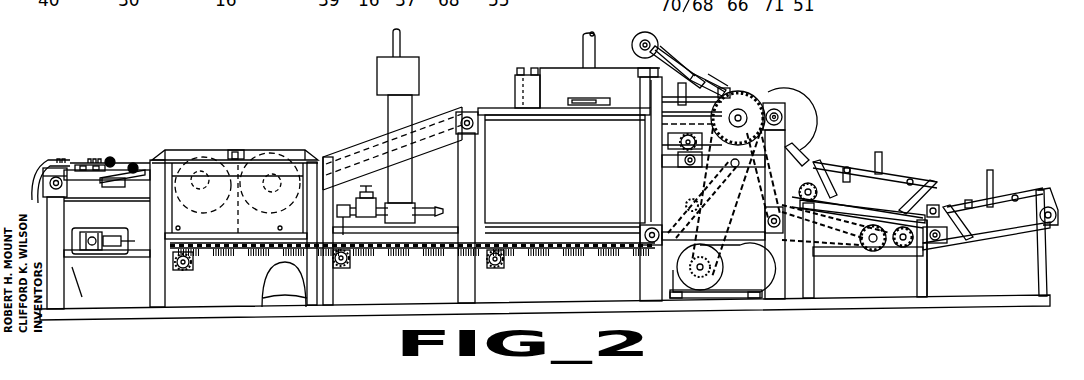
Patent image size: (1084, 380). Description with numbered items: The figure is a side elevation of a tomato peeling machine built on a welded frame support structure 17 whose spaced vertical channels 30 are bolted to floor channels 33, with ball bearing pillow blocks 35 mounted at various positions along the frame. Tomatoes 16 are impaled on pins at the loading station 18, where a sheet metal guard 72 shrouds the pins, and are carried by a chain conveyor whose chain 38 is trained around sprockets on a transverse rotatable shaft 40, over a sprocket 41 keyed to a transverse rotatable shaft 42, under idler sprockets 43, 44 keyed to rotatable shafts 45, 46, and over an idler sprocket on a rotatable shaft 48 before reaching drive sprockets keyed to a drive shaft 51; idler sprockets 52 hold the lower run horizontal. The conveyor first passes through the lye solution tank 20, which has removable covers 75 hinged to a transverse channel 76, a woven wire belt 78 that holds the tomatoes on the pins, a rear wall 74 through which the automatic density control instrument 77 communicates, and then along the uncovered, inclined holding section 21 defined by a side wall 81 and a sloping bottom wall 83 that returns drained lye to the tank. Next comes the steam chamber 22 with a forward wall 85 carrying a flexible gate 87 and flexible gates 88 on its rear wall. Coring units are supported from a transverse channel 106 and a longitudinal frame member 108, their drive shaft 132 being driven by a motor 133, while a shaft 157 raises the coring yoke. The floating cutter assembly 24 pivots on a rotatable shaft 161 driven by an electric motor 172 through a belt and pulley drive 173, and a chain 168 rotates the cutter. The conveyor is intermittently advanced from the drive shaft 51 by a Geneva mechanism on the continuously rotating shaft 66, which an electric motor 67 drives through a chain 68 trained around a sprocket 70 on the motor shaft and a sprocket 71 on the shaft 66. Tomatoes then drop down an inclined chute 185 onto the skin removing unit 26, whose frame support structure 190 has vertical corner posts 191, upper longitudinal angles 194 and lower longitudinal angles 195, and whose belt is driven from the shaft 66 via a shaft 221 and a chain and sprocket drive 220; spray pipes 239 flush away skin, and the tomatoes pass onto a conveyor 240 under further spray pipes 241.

The sheet metal guard 72 is at (44, 168).
The loading station 18 is at (78, 163).
The chain 38 is at (85, 167).
The tomatoes 16 is at (135, 163).
The idler sprocket 43 is at (190, 157).
The removable covers 75 is at (250, 152).
The idler sprocket 44 is at (272, 156).
The holding section 21 is at (350, 150).
The side wall 81 is at (376, 150).
The automatic density control instrument 77 is at (398, 126).
The steam chamber 22 is at (566, 67).
The forward wall 85 is at (515, 83).
The gate 87 is at (535, 95).
The flexible gates 88 is at (646, 91).
The belt and pulley drive 173 is at (640, 60).
The electric motor 172 is at (648, 36).
The drive shaft 132 is at (652, 176).
The rotatable shaft 161 is at (691, 68).
The chain 168 is at (720, 84).
The floating cutter assembly 24 is at (733, 90).
The sprocket 71 is at (745, 110).
The continuously rotating shaft 66 is at (771, 87).
The ball bearing pillow blocks 35 is at (44, 180).
The drive shaft 51 is at (788, 118).
The inclined chute 185 is at (803, 152).
The skin removing unit 26 is at (860, 173).
The spray pipes 239 is at (918, 177).
The upper longitudinal angles 194 is at (879, 178).
The spray pipes 241 is at (970, 198).
The conveyor 240 is at (1050, 198).
The transverse rotatable shaft 40 is at (48, 188).
The sprocket 41 is at (100, 183).
The transverse rotatable shaft 42 is at (115, 187).
The transverse channel 76 is at (210, 183).
The rotatable shaft 45 is at (203, 185).
The woven wire belt 78 is at (251, 199).
The rotatable shaft 46 is at (270, 183).
The rear wall 74 is at (283, 215).
The lye solution tank 20 is at (235, 193).
The rotatable shaft 48 is at (482, 140).
The sloping bottom wall 83 is at (472, 166).
The motor 133 is at (655, 129).
The transverse channel 106 is at (657, 148).
The longitudinal frame member 108 is at (662, 162).
The shaft 157 is at (712, 173).
The chain 68 is at (712, 188).
The idler sprockets 52 is at (190, 266).
The vertical channels 30 is at (160, 283).
The frame support structure 17 is at (473, 252).
The floor channels 33 is at (858, 298).
The shaft 221 is at (812, 252).
The chain and sprocket drive 220 is at (815, 250).
The lower longitudinal angles 195 is at (872, 252).
The frame support structure 190 is at (926, 258).
The vertical corner posts 191 is at (926, 283).
The electric motor 67 is at (698, 282).
The sprocket 70 is at (706, 272).